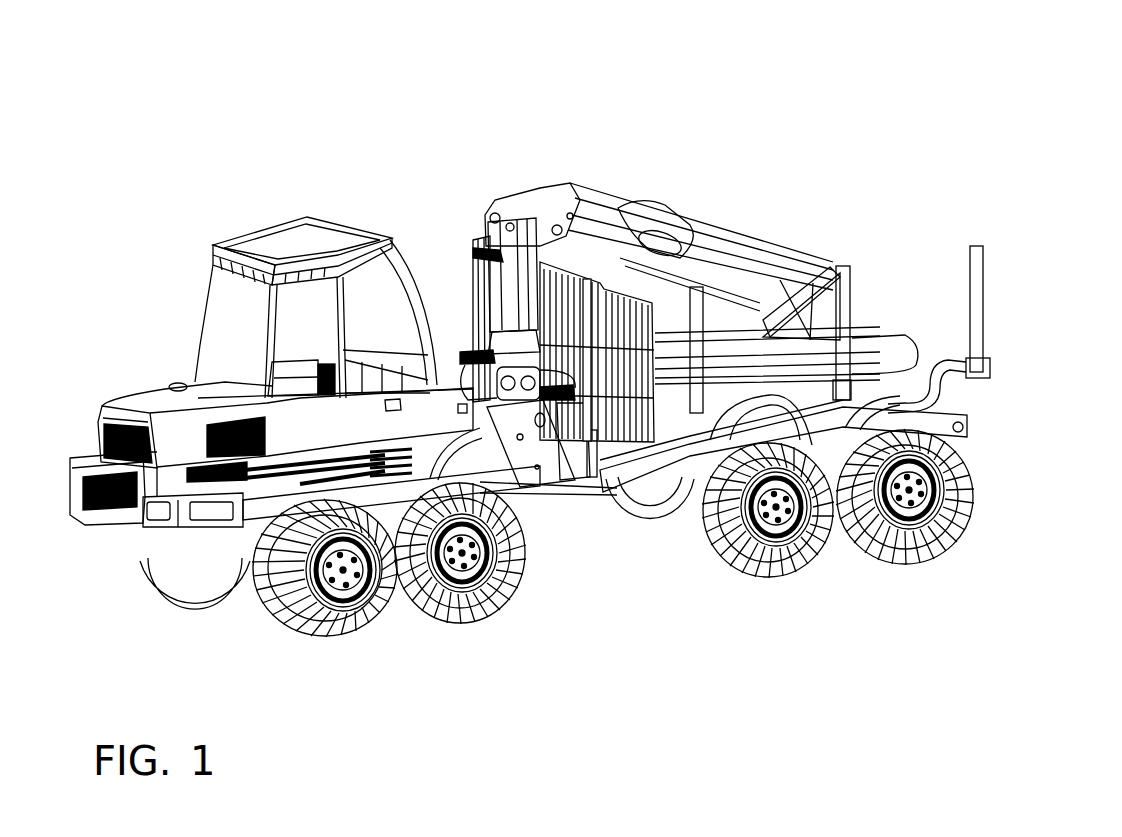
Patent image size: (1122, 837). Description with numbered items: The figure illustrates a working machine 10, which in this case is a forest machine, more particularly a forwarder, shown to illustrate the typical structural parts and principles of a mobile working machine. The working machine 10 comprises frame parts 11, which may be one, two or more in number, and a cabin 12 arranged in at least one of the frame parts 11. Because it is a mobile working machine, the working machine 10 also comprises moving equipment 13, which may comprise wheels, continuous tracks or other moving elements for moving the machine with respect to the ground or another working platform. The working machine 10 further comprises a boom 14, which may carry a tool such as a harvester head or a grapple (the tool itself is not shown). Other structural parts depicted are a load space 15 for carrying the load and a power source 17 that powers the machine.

The working machine 10 is at (882, 115).
The frame parts 11 is at (183, 518).
The cabin 12 is at (222, 287).
The moving equipment 13 is at (313, 600).
The boom 14 is at (618, 192).
The load space 15 is at (828, 243).
The power source 17 is at (167, 397).